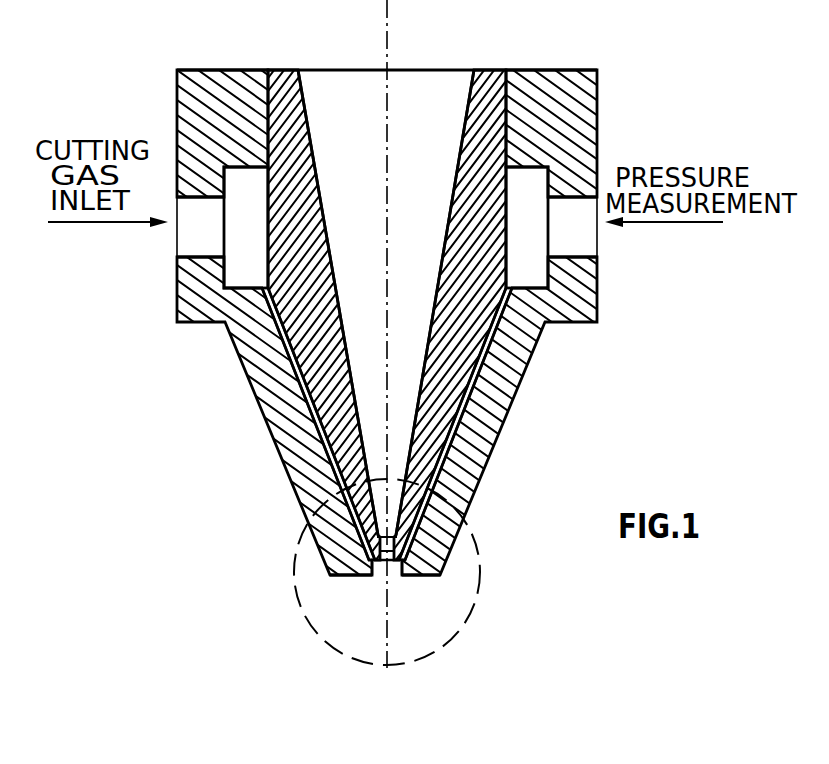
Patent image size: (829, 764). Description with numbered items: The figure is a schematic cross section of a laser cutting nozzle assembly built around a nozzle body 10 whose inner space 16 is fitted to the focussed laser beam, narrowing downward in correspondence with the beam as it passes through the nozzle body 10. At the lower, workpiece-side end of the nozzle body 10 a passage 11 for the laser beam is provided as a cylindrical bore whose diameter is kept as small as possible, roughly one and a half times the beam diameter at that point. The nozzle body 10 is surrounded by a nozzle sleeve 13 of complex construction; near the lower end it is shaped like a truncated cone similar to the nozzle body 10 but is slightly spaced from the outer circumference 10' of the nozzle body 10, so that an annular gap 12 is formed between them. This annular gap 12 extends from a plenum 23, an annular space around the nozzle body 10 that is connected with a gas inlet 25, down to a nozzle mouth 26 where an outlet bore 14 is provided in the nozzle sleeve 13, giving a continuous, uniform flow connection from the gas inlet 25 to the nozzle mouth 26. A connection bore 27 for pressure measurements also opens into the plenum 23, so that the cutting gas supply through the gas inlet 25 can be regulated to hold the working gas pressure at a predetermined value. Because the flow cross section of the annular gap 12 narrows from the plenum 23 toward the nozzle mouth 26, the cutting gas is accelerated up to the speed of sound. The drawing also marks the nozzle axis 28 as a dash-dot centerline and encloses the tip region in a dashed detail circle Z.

The nozzle body 10 is at (411, 283).
The outer circumference of the nozzle body 10' is at (498, 424).
The passage 11 is at (412, 549).
The annular gap 12 is at (330, 455).
The nozzle sleeve 13 is at (507, 364).
The outlet bore 14 is at (387, 578).
The inner space 16 is at (353, 113).
The plenum 23 is at (526, 212).
The gas inlet 25 is at (192, 236).
The nozzle mouth 26 is at (404, 597).
The connection bore 27 is at (568, 240).
The nozzle axis 28 is at (390, 2).
The detail region Z is at (290, 588).